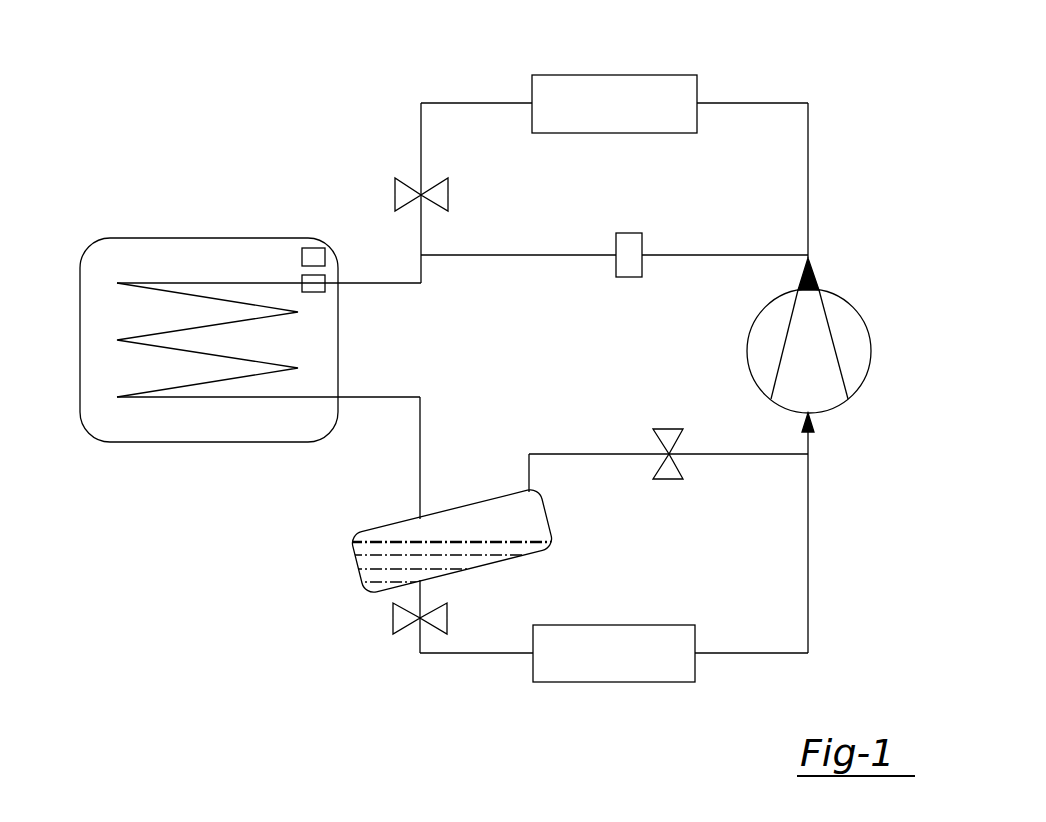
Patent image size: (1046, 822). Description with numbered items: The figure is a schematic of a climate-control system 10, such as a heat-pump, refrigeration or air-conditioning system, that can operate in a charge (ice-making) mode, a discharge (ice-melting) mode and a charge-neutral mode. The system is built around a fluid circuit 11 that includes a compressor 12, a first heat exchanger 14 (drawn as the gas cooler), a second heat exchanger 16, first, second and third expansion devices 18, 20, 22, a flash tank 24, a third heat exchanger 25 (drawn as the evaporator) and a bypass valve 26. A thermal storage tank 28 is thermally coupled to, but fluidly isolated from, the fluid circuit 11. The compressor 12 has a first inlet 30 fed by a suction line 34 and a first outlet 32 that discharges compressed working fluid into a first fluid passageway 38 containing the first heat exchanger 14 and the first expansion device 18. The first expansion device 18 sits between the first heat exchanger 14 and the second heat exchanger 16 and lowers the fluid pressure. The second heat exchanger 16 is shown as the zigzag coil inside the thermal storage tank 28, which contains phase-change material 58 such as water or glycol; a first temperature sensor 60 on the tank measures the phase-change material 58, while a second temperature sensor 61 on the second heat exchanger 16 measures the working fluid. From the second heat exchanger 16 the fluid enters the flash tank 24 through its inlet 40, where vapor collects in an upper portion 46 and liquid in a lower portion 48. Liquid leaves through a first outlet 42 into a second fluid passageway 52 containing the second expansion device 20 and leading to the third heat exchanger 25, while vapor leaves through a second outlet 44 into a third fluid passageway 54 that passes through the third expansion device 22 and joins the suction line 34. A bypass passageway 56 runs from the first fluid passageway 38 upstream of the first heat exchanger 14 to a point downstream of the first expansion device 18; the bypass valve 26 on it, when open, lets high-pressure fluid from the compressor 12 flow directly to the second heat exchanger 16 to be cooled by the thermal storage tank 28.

The climate-control system 10 is at (856, 75).
The fluid circuit 11 is at (838, 165).
The compressor 12 is at (871, 360).
The first heat exchanger 14 is at (612, 75).
The second heat exchanger 16 is at (225, 283).
The first expansion device 18 is at (395, 195).
The second expansion device 20 is at (393, 618).
The third expansion device 22 is at (668, 480).
The flash tank 24 is at (356, 540).
The third heat exchanger 25 is at (613, 682).
The bypass valve 26 is at (630, 233).
The thermal storage tank 28 is at (85, 238).
The first inlet 30 is at (815, 428).
The first outlet 32 is at (818, 285).
The suction line 34 is at (805, 445).
The first fluid passageway 38 is at (812, 186).
The inlet 40 is at (420, 518).
The first outlet 42 is at (432, 584).
The second outlet 44 is at (529, 490).
The upper portion 46 is at (518, 512).
The lower portion 48 is at (378, 565).
The second fluid passageway 52 is at (458, 656).
The third fluid passageway 54 is at (594, 452).
The bypass passageway 56 is at (548, 253).
The phase-change material 58 is at (110, 415).
The first temperature sensor 60 is at (302, 257).
The second temperature sensor 61 is at (330, 283).